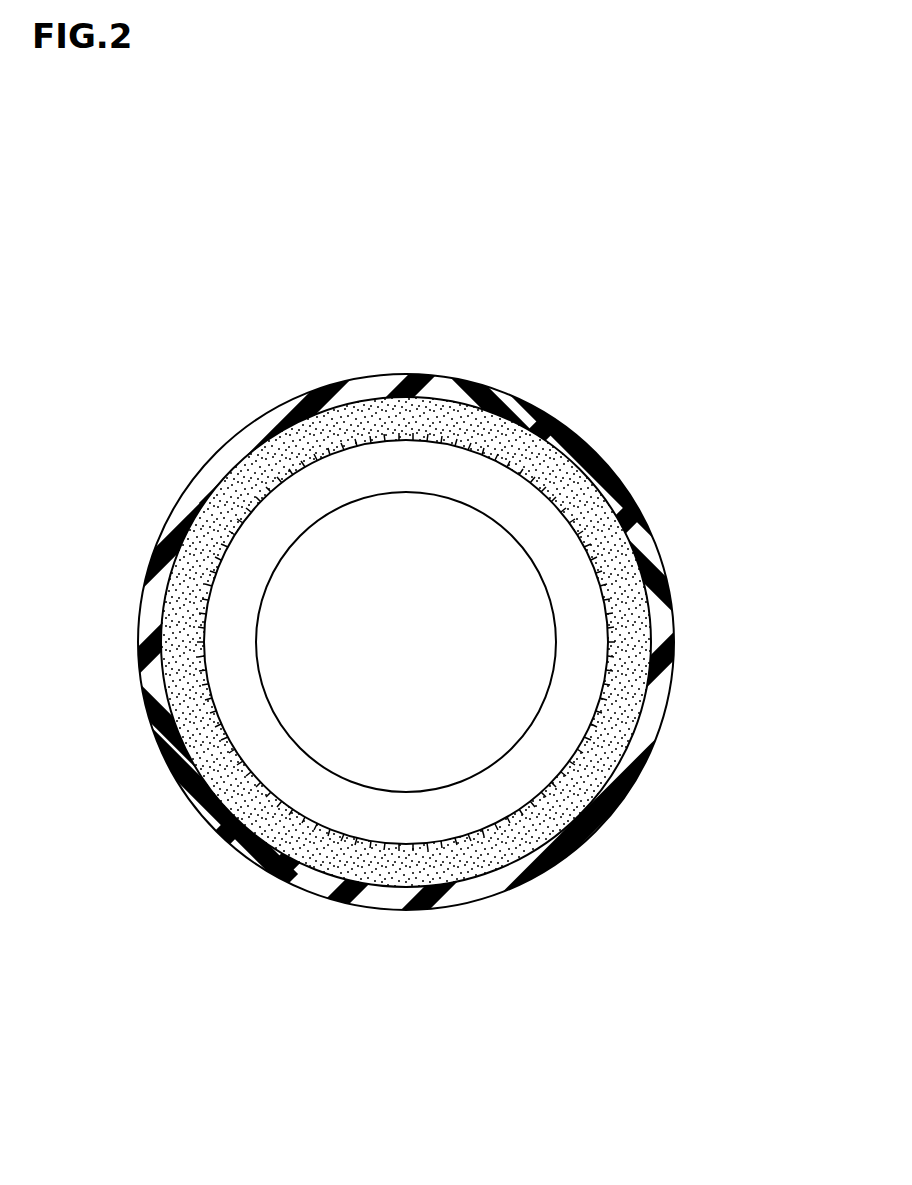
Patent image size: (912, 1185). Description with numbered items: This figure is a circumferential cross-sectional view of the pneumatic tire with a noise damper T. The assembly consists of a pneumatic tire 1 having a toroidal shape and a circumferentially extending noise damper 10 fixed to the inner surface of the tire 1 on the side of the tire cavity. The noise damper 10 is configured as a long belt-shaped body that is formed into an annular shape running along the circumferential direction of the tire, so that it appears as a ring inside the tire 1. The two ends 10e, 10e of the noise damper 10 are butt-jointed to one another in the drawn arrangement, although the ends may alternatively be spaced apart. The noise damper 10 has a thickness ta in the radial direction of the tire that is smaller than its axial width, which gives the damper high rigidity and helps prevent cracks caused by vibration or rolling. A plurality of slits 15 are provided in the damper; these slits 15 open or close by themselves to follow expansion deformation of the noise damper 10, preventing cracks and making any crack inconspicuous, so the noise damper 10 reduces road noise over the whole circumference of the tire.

The pneumatic tire with a noise damper T is at (746, 425).
The pneumatic tire 1 is at (666, 524).
The noise damper 10 is at (597, 496).
The end of the noise damper 10e is at (453, 438).
The slit 15 is at (163, 671).
The thickness ta is at (605, 708).